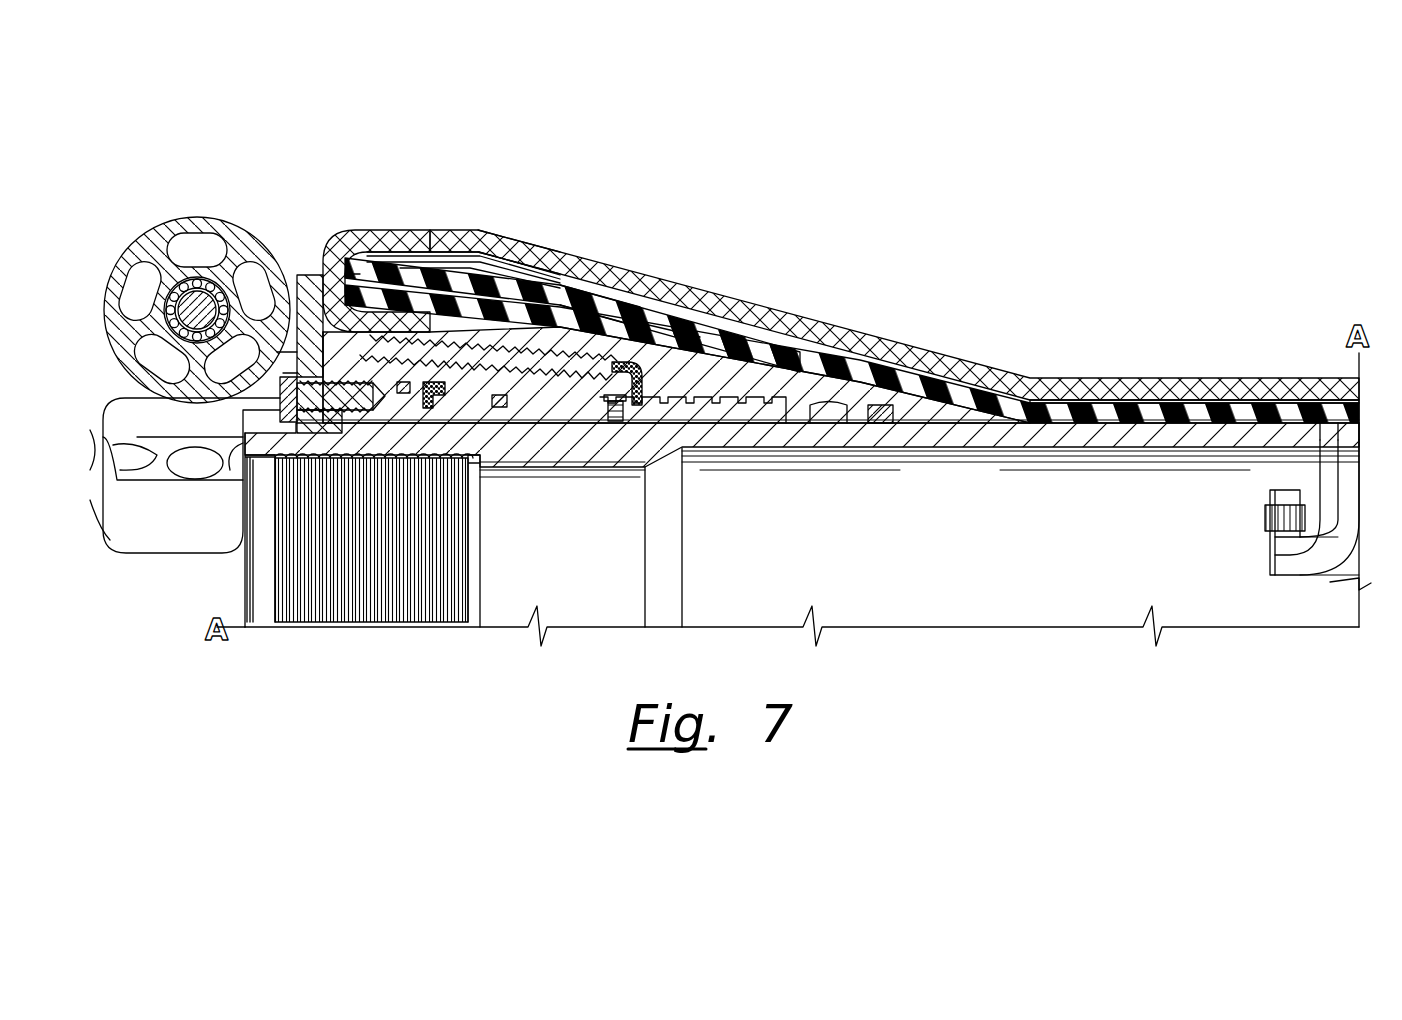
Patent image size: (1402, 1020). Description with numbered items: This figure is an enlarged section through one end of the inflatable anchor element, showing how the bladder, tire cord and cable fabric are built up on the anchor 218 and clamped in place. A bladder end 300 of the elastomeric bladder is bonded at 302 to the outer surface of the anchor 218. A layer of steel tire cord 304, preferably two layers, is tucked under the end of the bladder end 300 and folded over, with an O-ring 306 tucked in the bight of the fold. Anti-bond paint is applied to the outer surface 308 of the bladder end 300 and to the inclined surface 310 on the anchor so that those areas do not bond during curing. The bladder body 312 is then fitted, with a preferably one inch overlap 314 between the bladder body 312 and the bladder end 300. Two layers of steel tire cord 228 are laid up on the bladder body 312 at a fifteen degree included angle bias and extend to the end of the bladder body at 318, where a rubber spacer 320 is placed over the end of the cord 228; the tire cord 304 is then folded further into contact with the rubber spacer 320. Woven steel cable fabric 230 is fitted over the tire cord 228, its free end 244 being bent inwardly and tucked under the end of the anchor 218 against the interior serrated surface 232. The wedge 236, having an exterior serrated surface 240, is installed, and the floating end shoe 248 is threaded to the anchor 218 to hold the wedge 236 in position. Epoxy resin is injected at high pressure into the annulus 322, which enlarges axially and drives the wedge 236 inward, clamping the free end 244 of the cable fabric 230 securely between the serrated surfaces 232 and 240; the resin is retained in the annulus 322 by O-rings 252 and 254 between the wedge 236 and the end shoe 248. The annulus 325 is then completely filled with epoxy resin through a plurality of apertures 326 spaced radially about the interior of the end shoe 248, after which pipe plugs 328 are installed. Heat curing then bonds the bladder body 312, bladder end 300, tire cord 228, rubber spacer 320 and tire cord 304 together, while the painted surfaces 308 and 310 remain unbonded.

The anchor 218 is at (697, 358).
The steel tire cord 228 is at (793, 330).
The woven steel cable fabric 230 is at (1178, 388).
The interior serrated surface 232 is at (500, 282).
The wedge 236 is at (593, 387).
The exterior serrated surface 240 is at (515, 327).
The free end 244 is at (605, 310).
The floating end shoe 248 is at (407, 458).
The O-ring 252 is at (408, 410).
The O-ring 254 is at (503, 340).
The bladder end 300 is at (572, 300).
The bond 302 is at (376, 252).
The steel tire cord 304 is at (350, 256).
The O-ring 306 is at (323, 263).
The outer surface 308 is at (550, 290).
The inclined surface 310 is at (733, 347).
The bladder body 312 is at (690, 320).
The overlap 314 is at (465, 268).
The end of bladder body 318 is at (390, 258).
The rubber spacer 320 is at (435, 260).
The annulus 322 is at (423, 392).
The annulus 325 is at (665, 322).
The apertures 326 is at (630, 405).
The pipe plugs 328 is at (677, 449).